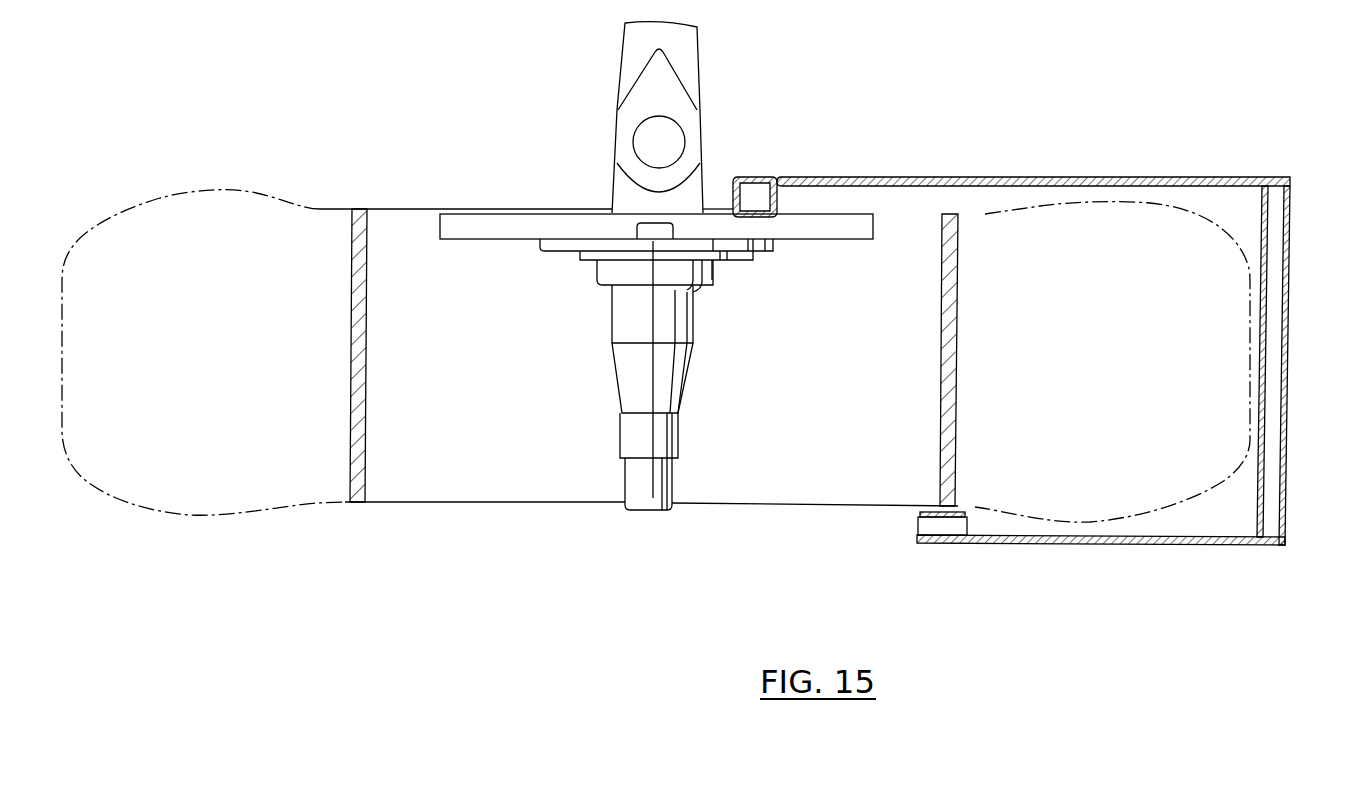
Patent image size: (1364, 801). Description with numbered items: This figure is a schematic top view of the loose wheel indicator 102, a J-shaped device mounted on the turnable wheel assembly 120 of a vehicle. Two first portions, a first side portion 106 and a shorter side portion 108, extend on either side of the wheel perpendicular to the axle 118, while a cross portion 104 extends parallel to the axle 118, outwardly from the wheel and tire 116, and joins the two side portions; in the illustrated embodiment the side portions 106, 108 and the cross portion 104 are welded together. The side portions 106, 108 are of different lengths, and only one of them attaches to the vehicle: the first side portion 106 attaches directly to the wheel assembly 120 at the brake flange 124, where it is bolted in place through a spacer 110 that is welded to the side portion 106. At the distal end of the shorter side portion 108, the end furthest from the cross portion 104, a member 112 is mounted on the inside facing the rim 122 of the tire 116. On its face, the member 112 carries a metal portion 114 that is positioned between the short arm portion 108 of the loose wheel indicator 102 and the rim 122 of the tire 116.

The loose wheel indicator 102 is at (1040, 346).
The cross portion 104 is at (1290, 332).
The first side portion 106 is at (986, 178).
The short side portion 108 is at (1146, 546).
The spacer 110 is at (756, 191).
The member 112 is at (936, 529).
The metal portion 114 is at (921, 512).
The tire 116 is at (230, 487).
The axle 118 is at (653, 496).
The wheel assembly 120 is at (669, 403).
The rim 122 is at (955, 416).
The brake flange 124 is at (815, 231).